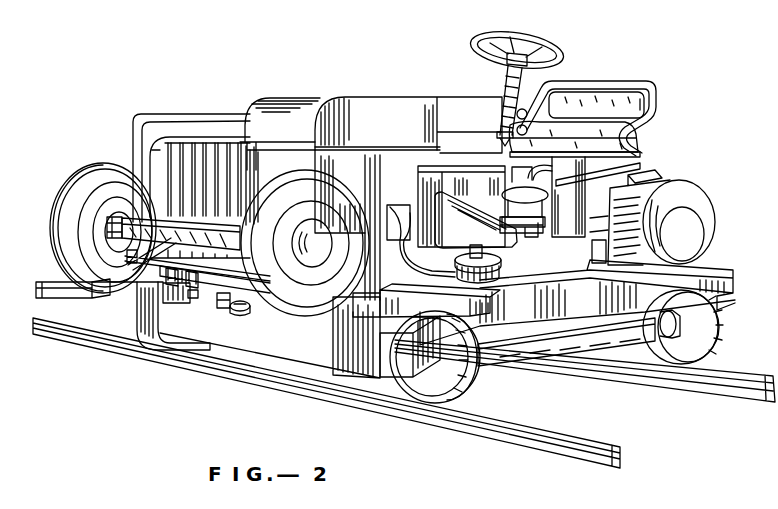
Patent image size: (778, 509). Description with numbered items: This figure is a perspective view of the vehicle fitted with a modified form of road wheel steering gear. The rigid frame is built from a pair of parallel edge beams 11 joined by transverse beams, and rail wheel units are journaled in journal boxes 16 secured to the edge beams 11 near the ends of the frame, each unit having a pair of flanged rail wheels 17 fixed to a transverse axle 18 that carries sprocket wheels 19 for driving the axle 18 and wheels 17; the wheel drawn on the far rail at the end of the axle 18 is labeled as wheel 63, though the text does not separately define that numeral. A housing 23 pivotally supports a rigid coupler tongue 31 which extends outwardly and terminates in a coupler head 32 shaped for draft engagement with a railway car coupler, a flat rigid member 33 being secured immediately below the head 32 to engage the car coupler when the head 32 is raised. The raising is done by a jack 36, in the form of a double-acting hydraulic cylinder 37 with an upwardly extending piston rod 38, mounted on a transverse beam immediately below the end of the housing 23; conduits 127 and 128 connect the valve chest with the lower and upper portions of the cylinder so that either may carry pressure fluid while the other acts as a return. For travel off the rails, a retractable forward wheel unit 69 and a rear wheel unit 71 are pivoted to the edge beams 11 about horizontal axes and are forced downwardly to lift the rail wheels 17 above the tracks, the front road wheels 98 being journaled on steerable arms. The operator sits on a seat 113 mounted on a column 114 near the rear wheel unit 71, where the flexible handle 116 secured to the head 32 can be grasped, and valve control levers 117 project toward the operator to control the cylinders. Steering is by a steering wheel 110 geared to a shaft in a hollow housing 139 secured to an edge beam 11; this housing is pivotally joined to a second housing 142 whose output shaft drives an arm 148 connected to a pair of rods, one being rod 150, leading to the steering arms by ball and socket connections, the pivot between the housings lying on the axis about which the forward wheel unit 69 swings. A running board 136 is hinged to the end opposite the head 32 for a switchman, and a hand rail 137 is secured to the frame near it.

The edge beams 11 is at (733, 290).
The journal boxes 16 is at (401, 362).
The rail wheels 17 is at (440, 408).
The transverse axle 18 is at (543, 345).
The sprocket wheels 19 is at (712, 343).
The housing 23 is at (443, 183).
The coupler tongue 31 is at (430, 195).
The coupler head 32 is at (505, 177).
The flat rigid member 33 is at (542, 228).
The jack 36 is at (493, 277).
The double-acting hydraulic cylinder 37 is at (502, 259).
The piston rod 38 is at (468, 257).
The rear rail wheel 63 is at (666, 355).
The forward wheel unit 69 is at (66, 174).
The rear wheel unit 71 is at (722, 199).
The front road wheels 98 is at (100, 161).
The steering wheel 110 is at (553, 48).
The seat 113 is at (633, 140).
The column 114 is at (583, 177).
The flexible handle 116 is at (566, 197).
The valve control levers 117 is at (500, 112).
The conduit 127 is at (368, 293).
The conduit 128 is at (397, 243).
The running board 136 is at (83, 298).
The hand rail 137 is at (160, 114).
The hollow housing 139 is at (247, 314).
The housing 142 is at (217, 300).
The arm 148 is at (190, 294).
The rod 150 is at (140, 283).